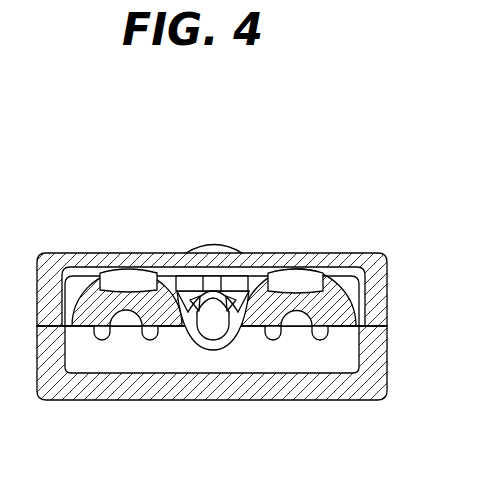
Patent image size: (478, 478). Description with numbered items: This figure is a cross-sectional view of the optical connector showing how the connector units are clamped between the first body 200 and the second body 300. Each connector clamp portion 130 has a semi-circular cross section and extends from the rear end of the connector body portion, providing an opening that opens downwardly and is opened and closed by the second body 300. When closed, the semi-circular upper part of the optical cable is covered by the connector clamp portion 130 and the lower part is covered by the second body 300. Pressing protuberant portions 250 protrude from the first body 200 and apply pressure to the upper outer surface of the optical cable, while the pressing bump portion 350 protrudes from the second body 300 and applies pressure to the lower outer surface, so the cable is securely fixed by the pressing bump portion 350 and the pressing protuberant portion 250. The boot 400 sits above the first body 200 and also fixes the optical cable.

The connector clamp portion 130 is at (298, 297).
The first body 200 is at (73, 262).
The pressing protuberant portion 250 is at (187, 282).
The second body 300 is at (112, 392).
The pressing bump portion 350 is at (213, 346).
The boot 400 is at (213, 248).